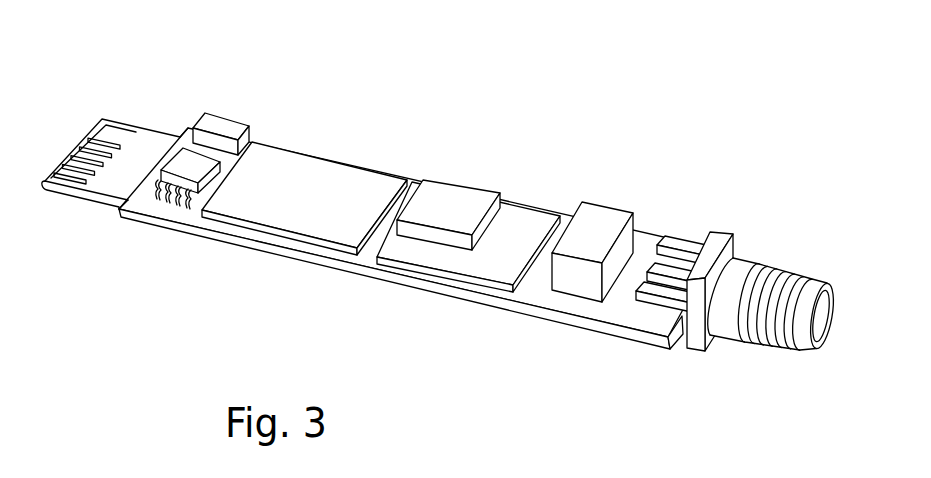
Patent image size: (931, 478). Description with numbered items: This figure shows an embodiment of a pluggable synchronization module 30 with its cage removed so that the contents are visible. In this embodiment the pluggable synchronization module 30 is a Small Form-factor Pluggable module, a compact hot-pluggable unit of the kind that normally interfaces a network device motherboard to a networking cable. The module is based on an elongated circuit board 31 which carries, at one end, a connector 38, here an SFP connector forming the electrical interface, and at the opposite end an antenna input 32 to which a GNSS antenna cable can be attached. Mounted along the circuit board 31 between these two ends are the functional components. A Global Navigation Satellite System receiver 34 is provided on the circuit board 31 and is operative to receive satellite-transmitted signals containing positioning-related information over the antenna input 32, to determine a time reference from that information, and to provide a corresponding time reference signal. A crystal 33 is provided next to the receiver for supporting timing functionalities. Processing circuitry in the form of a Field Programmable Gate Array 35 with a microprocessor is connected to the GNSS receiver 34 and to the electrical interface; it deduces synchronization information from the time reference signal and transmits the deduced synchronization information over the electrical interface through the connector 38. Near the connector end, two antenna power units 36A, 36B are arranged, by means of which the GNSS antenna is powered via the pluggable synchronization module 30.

The pluggable synchronization module 30 is at (622, 126).
The circuit board 31 is at (625, 317).
The antenna input 32 is at (738, 270).
The crystal 33 is at (598, 214).
The Global Navigation Satellite System receiver 34 is at (468, 193).
The Field Programmable Gate Array 35 is at (328, 177).
The antenna power unit 36A is at (220, 125).
The antenna power unit 36B is at (182, 162).
The connector 38 is at (83, 166).